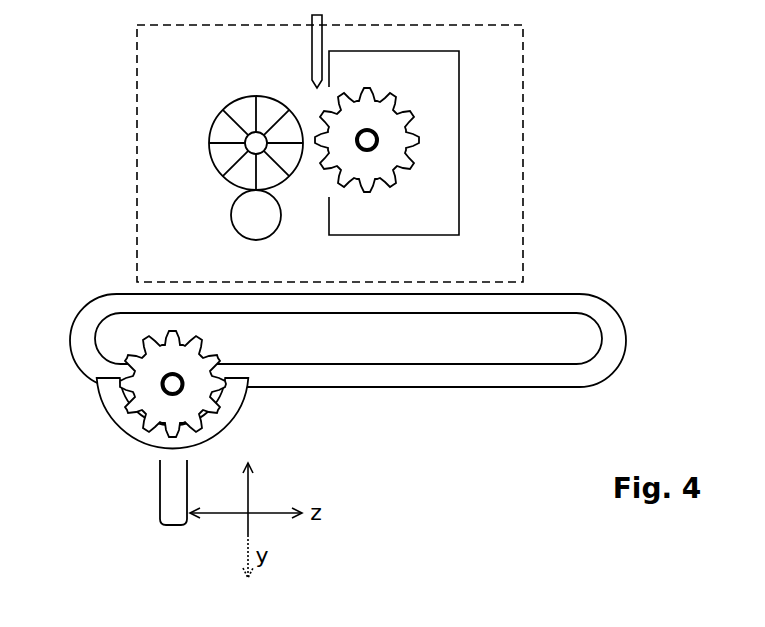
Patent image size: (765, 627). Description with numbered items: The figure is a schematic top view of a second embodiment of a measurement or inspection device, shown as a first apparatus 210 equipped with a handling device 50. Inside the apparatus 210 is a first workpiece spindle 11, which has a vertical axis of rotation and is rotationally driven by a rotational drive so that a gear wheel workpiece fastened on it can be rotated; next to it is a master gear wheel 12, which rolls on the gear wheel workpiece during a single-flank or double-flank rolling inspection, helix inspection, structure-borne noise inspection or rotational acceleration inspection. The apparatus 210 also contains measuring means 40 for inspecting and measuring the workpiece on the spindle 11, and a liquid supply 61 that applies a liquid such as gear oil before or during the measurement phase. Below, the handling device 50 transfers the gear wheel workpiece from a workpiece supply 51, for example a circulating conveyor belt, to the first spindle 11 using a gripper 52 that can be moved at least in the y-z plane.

The first workpiece spindle 11 is at (240, 99).
The master gear wheel 12 is at (407, 167).
The measuring means 40 is at (419, 80).
The handling device 50 is at (82, 268).
The workpiece supply 51 is at (608, 365).
The gripper 52 is at (248, 403).
The liquid supply 61 is at (315, 63).
The first apparatus 210 is at (499, 270).